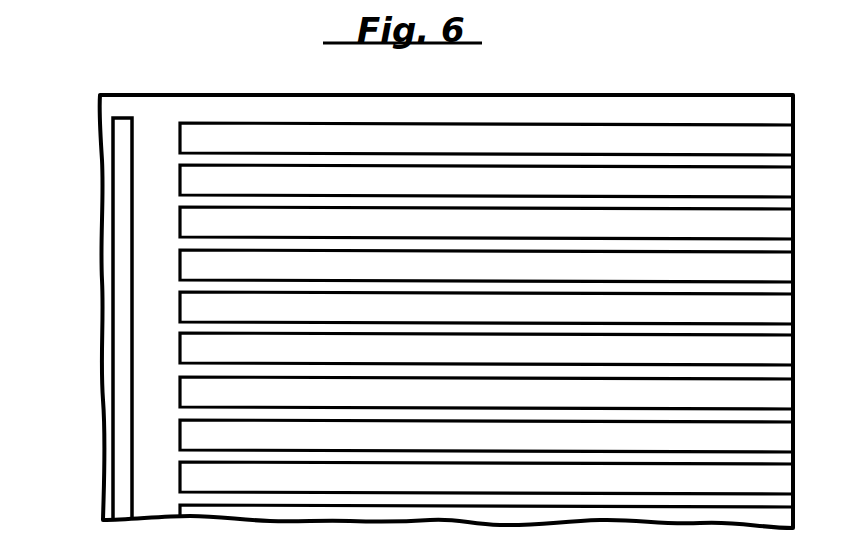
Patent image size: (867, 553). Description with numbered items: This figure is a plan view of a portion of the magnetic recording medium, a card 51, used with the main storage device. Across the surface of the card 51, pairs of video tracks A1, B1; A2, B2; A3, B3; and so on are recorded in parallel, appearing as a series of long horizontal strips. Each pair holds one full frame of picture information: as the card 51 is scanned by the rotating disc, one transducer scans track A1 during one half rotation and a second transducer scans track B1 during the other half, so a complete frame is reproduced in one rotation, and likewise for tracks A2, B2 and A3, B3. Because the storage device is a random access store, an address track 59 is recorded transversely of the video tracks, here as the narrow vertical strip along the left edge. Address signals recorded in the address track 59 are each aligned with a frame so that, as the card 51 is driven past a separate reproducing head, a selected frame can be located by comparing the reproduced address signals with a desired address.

The card 51 is at (158, 113).
The address track 59 is at (122, 222).
The track A1 is at (180, 143).
The track B1 is at (180, 185).
The track A2 is at (180, 228).
The track B2 is at (180, 270).
The track A3 is at (180, 313).
The track B3 is at (180, 354).